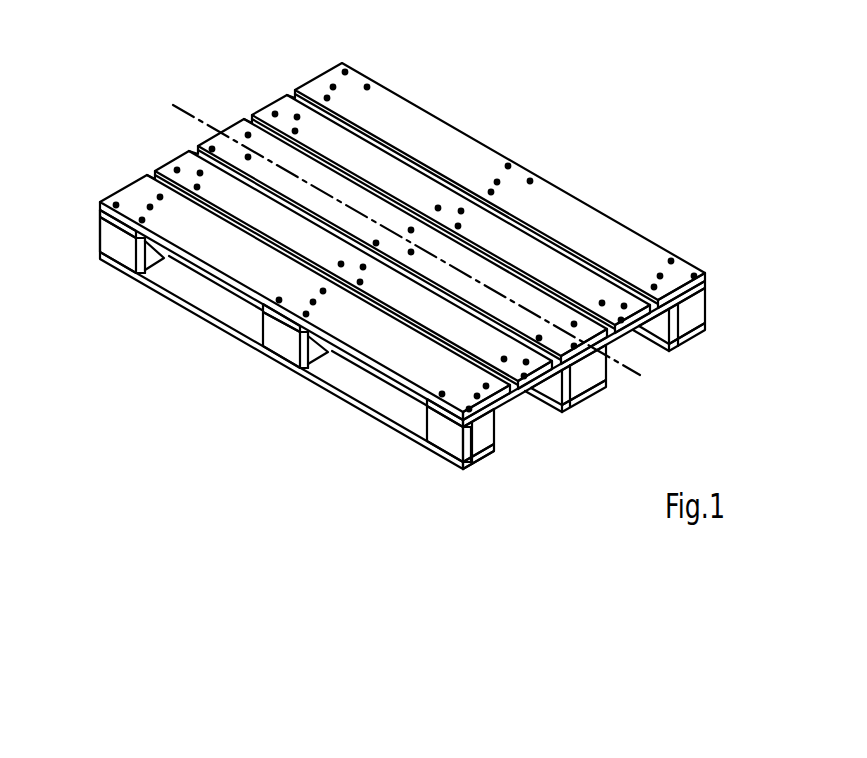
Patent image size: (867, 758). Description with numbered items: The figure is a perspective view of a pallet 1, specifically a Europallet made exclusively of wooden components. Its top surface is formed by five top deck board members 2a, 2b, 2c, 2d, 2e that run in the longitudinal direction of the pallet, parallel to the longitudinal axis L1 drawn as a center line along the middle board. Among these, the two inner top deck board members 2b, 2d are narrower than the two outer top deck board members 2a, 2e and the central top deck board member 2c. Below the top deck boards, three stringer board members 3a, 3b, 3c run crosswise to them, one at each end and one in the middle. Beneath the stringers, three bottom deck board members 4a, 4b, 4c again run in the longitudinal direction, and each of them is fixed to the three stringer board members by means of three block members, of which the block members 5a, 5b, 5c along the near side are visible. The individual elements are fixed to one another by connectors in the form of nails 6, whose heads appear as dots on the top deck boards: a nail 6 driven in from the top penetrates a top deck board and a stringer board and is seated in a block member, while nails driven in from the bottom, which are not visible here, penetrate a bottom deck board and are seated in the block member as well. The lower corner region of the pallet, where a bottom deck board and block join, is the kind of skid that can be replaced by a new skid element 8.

The pallet 1 is at (387, 265).
The top deck board member 2a is at (128, 195).
The top deck board member 2b is at (170, 167).
The top deck board member 2c is at (232, 128).
The top deck board member 2d is at (272, 108).
The top deck board member 2e is at (318, 82).
The stringer board member 3a is at (127, 238).
The stringer board member 3b is at (287, 330).
The stringer board member 3c is at (518, 398).
The bottom deck board member 4a is at (372, 396).
The bottom deck board member 4b is at (590, 400).
The bottom deck board member 4c is at (693, 336).
The block member 5a is at (112, 238).
The block member 5b is at (278, 337).
The block member 5c is at (447, 438).
The nails 6 is at (491, 192).
The skid element 8 is at (504, 470).
The longitudinal axis L1 is at (422, 250).